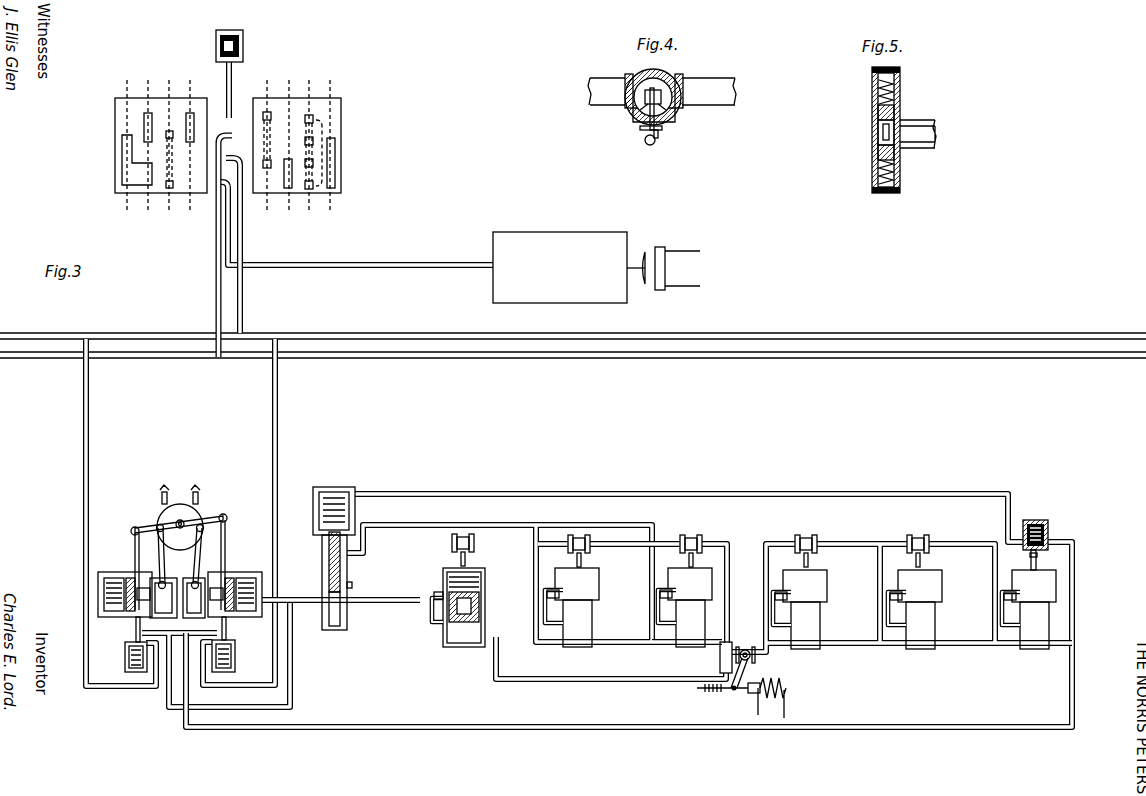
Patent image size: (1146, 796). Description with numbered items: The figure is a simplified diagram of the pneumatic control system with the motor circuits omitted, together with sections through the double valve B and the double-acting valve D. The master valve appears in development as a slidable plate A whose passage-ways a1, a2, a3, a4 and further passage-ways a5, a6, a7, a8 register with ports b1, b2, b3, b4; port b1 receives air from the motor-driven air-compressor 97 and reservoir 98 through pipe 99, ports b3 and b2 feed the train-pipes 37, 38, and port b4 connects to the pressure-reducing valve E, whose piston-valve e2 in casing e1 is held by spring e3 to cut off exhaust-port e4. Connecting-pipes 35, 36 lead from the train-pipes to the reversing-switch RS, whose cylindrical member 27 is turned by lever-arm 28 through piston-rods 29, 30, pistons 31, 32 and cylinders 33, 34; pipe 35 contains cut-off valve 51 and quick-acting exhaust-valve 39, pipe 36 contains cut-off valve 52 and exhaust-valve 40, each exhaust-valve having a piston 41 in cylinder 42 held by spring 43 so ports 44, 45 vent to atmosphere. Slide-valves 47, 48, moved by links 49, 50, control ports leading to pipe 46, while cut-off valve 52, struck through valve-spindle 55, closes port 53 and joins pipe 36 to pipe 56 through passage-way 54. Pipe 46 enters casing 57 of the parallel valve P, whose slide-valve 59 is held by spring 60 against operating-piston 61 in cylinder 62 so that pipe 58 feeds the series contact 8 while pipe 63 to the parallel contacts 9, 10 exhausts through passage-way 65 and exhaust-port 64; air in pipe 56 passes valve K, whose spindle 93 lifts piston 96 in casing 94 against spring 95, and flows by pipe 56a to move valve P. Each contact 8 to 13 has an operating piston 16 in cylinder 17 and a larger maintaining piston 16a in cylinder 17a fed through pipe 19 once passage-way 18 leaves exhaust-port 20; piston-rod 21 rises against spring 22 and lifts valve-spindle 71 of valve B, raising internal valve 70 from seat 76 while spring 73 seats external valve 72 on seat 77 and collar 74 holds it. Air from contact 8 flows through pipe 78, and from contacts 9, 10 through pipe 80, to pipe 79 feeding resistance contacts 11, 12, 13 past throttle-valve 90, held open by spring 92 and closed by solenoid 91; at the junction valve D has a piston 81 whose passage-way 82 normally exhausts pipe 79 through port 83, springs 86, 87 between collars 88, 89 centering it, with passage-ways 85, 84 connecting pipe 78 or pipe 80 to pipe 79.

In FIG. 3, the slidable plate A is at (341, 107).
In FIG. 3, the pressure-reducing valve E is at (243, 40).
In FIG. 3, the valve-casing e1 is at (216, 46).
In FIG. 3, the piston-valve e2 is at (243, 55).
In FIG. 3, the spring e3 is at (243, 36).
In FIG. 3, the exhaust-port e4 is at (243, 50).
In FIG. 3, the passage-way a1 is at (188, 119).
In FIG. 3, the passage-way a2 is at (166, 134).
In FIG. 3, the passage-way a3 is at (144, 120).
In FIG. 3, the passage-way a4 is at (130, 176).
In FIG. 3, the contact segment a5 is at (275, 133).
In FIG. 3, the contact segment a6 is at (284, 180).
In FIG. 3, the contact segment a7 is at (316, 143).
In FIG. 3, the contact segment a8 is at (335, 185).
In FIG. 3, the port b1 is at (224, 188).
In FIG. 3, the port b2 is at (238, 237).
In FIG. 3, the port b3 is at (230, 138).
In FIG. 3, the port b4 is at (232, 113).
In FIG. 3, the train-pipe 37 is at (448, 359).
In FIG. 3, the train-pipe 38 is at (444, 334).
In FIG. 3, the connecting-pipe 35 is at (92, 448).
In FIG. 3, the connecting-pipe 36 is at (272, 428).
In FIG. 3, the motor-driven air-compressor 97 is at (670, 268).
In FIG. 3, the reservoir 98 is at (560, 267).
In FIG. 3, the pipe 99 is at (398, 265).
In FIG. 3, the reversing-switch RS is at (179, 571).
In FIG. 3, the cylindrical member 27 is at (200, 512).
In FIG. 3, the lever-arm 28 is at (150, 522).
In FIG. 3, the piston-rod 29 is at (133, 531).
In FIG. 3, the piston-rod 30 is at (228, 520).
In FIG. 3, the piston 31 is at (130, 572).
In FIG. 3, the piston 32 is at (226, 575).
In FIG. 3, the cylinder 33 is at (163, 598).
In FIG. 3, the cylinder 34 is at (195, 598).
In FIG. 3, the quick-acting exhaust-valve 39 is at (100, 612).
In FIG. 3, the quick-acting exhaust-valve 40 is at (275, 610).
In FIG. 3, the piston 41 is at (108, 618).
In FIG. 3, the cylinder 42 is at (100, 588).
In FIG. 3, the spring 43 is at (100, 580).
In FIG. 3, the port 44 is at (159, 615).
In FIG. 3, the port 45 is at (100, 598).
In FIG. 3, the pipe 46 is at (293, 680).
In FIG. 3, the slide-valve 47 is at (160, 575).
In FIG. 3, the slide-valve 48 is at (198, 575).
In FIG. 3, the link 49 is at (154, 554).
In FIG. 3, the link 50 is at (206, 554).
In FIG. 3, the cut-off valve 51 is at (127, 664).
In FIG. 3, the cut-off valve 52 is at (125, 650).
In FIG. 3, the port 53 is at (228, 646).
In FIG. 3, the passage-way 54 is at (235, 650).
In FIG. 3, the valve-spindle 55 is at (215, 595).
In FIG. 3, the pipe 56 is at (188, 698).
In FIG. 3, the pipe 56a is at (444, 500).
In FIG. 3, the casing 57 is at (347, 624).
In FIG. 3, the pipe 58 is at (380, 602).
In FIG. 3, the slide-valve 59 is at (322, 548).
In FIG. 3, the spring 60 is at (355, 516).
In FIG. 3, the operating-piston 61 is at (355, 491).
In FIG. 3, the cylinder 62 is at (313, 510).
In FIG. 3, the pipe 63 is at (444, 526).
In FIG. 3, the exhaust-port 64 is at (352, 584).
In FIG. 3, the passage-way 65 is at (350, 561).
In FIG. 3, the parallel controlling-valve P is at (343, 550).
In FIG. 3, the double valve B is at (471, 537).
In FIG. 4, the double valve B is at (672, 80).
In FIG. 3, the series contact 8 is at (714, 609).
In FIG. 3, the parallel contact 9 is at (572, 607).
In FIG. 3, the parallel contact 10 is at (685, 607).
In FIG. 3, the resistance-controlling contact 11 is at (800, 609).
In FIG. 3, the resistance-controlling contact 12 is at (915, 609).
In FIG. 3, the resistance-controlling contact 13 is at (1029, 609).
In FIG. 3, the operating piston 16 is at (480, 612).
In FIG. 3, the maintaining piston 16a is at (485, 592).
In FIG. 3, the cylinder 17 is at (463, 648).
In FIG. 3, the enlarged cylinder 17a is at (485, 600).
In FIG. 3, the passage-way 18 is at (485, 628).
In FIG. 3, the pipe connection 19 is at (432, 610).
In FIG. 3, the exhaust-port 20 is at (447, 626).
In FIG. 3, the piston-rod 21 is at (467, 560).
In FIG. 3, the spring 22 is at (485, 576).
In FIG. 3, the pipe 78 is at (570, 680).
In FIG. 5, the pipe 78 is at (900, 183).
In FIG. 3, the pipe 79 is at (768, 653).
In FIG. 5, the pipe 79 is at (912, 120).
In FIG. 3, the pipe 80 is at (727, 572).
In FIG. 5, the pipe 80 is at (905, 93).
In FIG. 3, the automatic double-acting valve D is at (720, 658).
In FIG. 5, the automatic double-acting valve D is at (864, 130).
In FIG. 3, the throttle-valve 90 is at (745, 648).
In FIG. 3, the solenoid 91 is at (790, 696).
In FIG. 3, the spring 92 is at (720, 694).
In FIG. 3, the valve K is at (1035, 520).
In FIG. 3, the valve-spindle 93 is at (1038, 556).
In FIG. 3, the casing 94 is at (1048, 531).
In FIG. 3, the spring 95 is at (1041, 521).
In FIG. 3, the piston 96 is at (1048, 546).
In FIG. 4, the internal valve 70 is at (640, 76).
In FIG. 4, the valve-spindle 71 is at (668, 110).
In FIG. 4, the external valve 72 is at (664, 130).
In FIG. 4, the spring 73 is at (647, 146).
In FIG. 4, the collar 74 is at (658, 140).
In FIG. 4, the seat 76 is at (690, 96).
In FIG. 4, the seat 77 is at (645, 122).
In FIG. 5, the piston 81 is at (872, 160).
In FIG. 5, the passage-way 82 is at (872, 130).
In FIG. 5, the port 83 is at (872, 138).
In FIG. 5, the passage-way 84 is at (935, 117).
In FIG. 5, the passage-way 85 is at (935, 150).
In FIG. 5, the spring 86 is at (900, 97).
In FIG. 5, the spring 87 is at (900, 166).
In FIG. 5, the collar 88 is at (900, 71).
In FIG. 5, the collar 89 is at (897, 194).